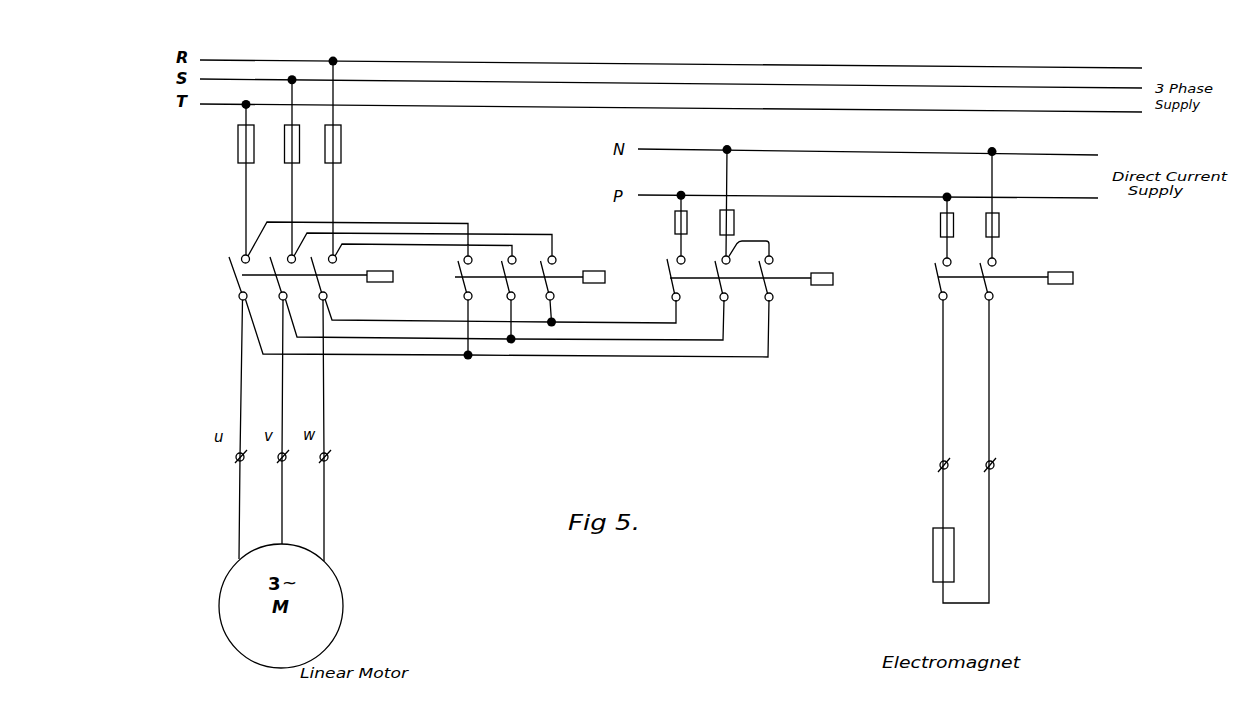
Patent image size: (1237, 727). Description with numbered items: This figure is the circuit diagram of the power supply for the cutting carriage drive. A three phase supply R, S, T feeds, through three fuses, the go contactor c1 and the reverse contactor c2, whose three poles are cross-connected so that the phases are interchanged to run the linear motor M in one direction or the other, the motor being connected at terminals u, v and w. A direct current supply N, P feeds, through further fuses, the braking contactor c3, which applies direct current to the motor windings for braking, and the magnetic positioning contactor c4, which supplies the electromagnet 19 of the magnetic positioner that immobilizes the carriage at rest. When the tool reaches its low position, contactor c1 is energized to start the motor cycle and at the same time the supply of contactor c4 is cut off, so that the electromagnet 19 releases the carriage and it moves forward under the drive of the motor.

The magnetic positioner electromagnet 19 is at (933, 547).
The go contactor c1 is at (311, 283).
The reverse contactor c2 is at (530, 283).
The braking contactor c3 is at (750, 276).
The magnetic positioning contactor c4 is at (1004, 284).